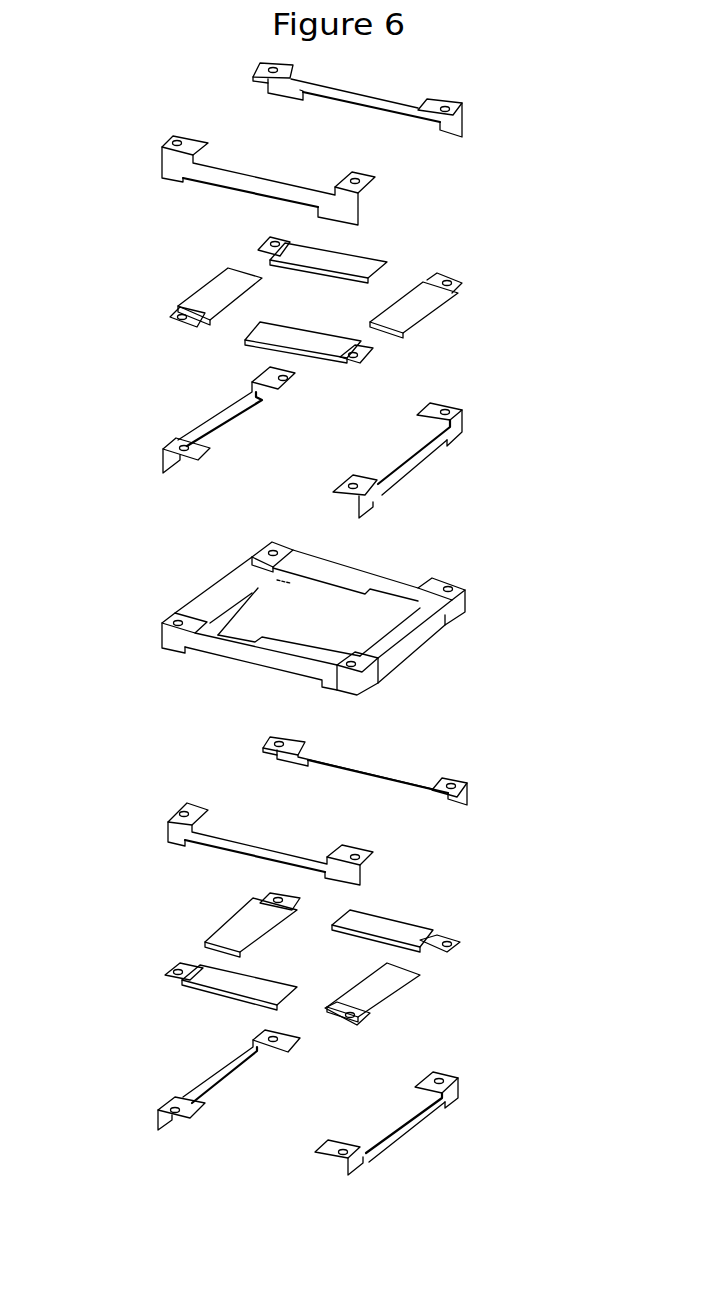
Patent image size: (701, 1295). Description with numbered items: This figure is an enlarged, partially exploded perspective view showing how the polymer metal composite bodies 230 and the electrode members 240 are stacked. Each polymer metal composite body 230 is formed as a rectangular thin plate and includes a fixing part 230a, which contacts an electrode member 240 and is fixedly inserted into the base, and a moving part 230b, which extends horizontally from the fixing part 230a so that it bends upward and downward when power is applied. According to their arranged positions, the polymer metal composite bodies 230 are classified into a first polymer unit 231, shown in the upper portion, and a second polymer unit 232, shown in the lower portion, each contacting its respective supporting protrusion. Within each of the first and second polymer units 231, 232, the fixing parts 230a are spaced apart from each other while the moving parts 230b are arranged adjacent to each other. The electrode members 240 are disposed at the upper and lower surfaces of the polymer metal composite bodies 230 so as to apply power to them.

The electrode member 240 is at (450, 128).
The polymer metal composite body 230 is at (396, 653).
The fixing part 230a is at (455, 948).
The moving part 230b is at (402, 930).
The first polymer unit 231 is at (155, 272).
The second polymer unit 232 is at (332, 653).